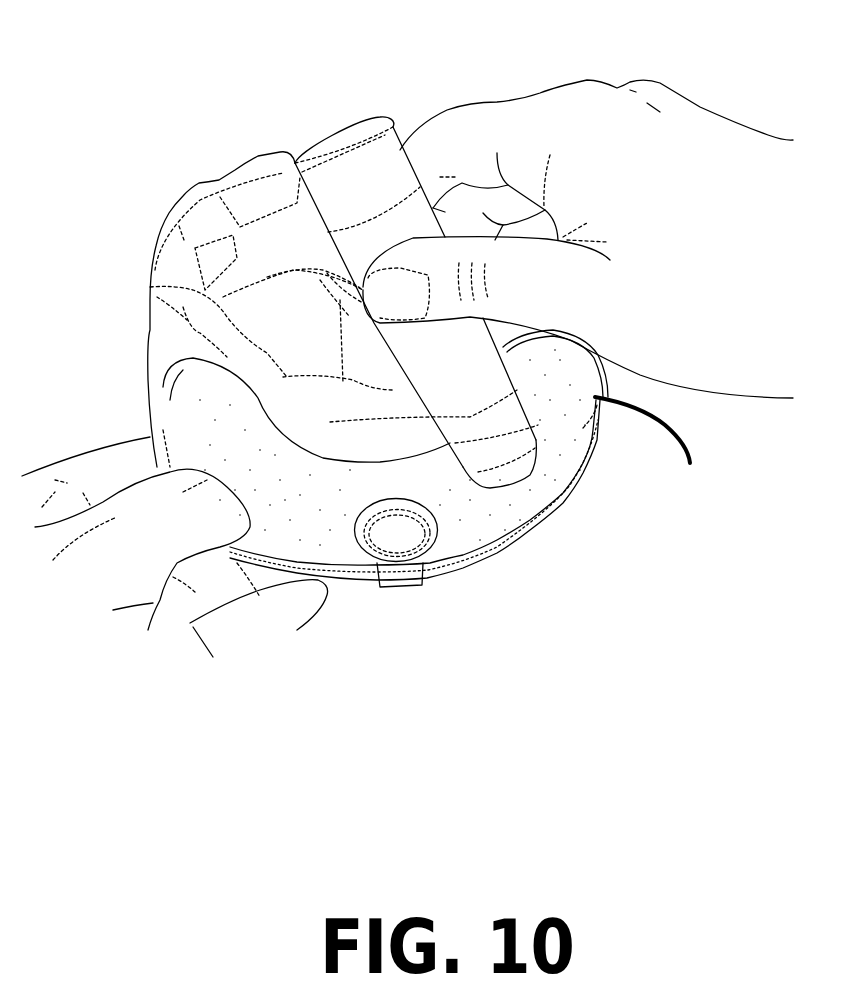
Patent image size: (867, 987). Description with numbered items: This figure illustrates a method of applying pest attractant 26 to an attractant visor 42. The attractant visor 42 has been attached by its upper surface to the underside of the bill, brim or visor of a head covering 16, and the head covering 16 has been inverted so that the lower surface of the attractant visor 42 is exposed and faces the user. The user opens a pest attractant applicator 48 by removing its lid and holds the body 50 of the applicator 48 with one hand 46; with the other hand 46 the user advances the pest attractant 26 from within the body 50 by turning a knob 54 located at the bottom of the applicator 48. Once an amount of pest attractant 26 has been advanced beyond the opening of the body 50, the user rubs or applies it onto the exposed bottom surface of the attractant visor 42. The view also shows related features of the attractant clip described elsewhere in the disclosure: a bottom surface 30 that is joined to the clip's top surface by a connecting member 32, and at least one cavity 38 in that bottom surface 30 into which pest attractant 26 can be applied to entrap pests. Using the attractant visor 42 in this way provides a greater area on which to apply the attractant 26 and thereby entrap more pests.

The head covering 16 is at (402, 392).
The pest attractant 26 is at (527, 460).
The bottom surface 30 is at (382, 494).
The connecting member 32 is at (403, 578).
The cavity 38 is at (398, 512).
The attractant visor 42 is at (655, 445).
The hand 46 is at (733, 140).
The pest attractant applicator 48 is at (297, 118).
The body 50 is at (351, 244).
The knob 54 is at (385, 138).